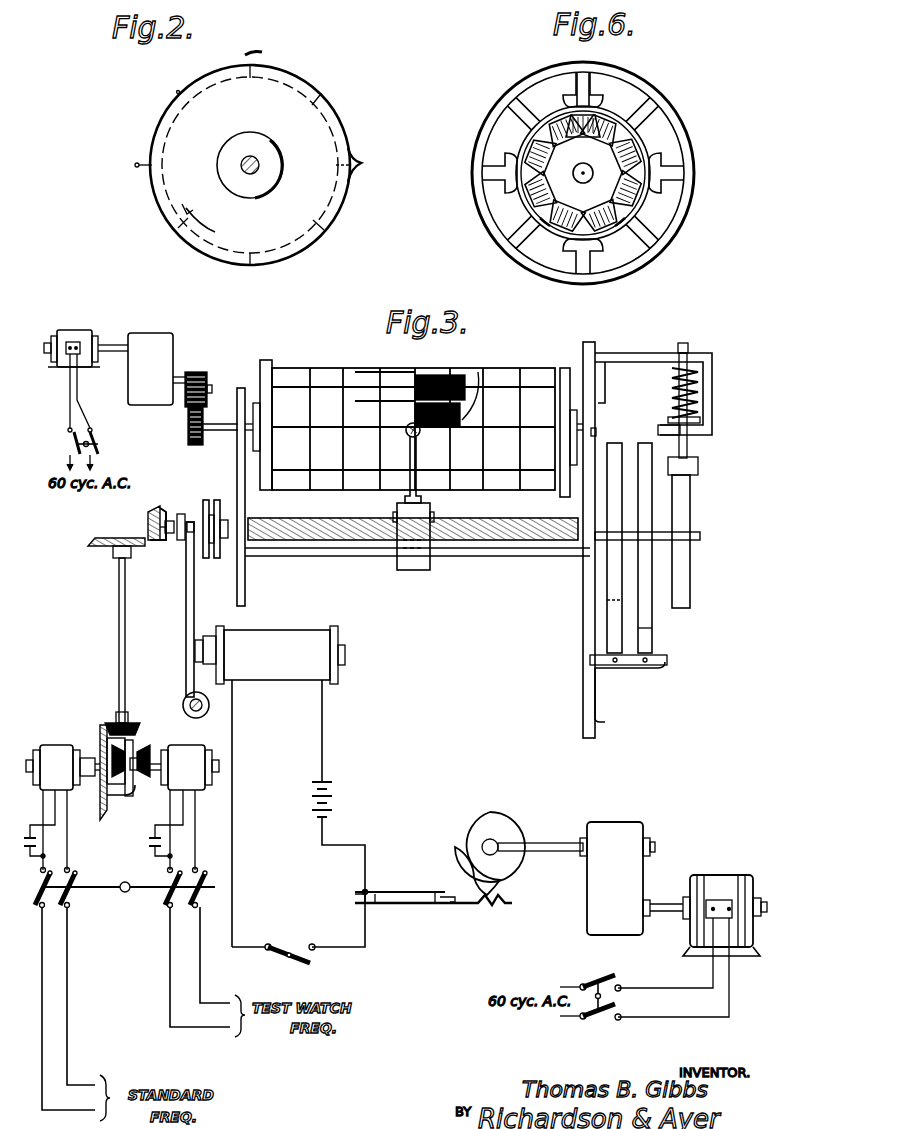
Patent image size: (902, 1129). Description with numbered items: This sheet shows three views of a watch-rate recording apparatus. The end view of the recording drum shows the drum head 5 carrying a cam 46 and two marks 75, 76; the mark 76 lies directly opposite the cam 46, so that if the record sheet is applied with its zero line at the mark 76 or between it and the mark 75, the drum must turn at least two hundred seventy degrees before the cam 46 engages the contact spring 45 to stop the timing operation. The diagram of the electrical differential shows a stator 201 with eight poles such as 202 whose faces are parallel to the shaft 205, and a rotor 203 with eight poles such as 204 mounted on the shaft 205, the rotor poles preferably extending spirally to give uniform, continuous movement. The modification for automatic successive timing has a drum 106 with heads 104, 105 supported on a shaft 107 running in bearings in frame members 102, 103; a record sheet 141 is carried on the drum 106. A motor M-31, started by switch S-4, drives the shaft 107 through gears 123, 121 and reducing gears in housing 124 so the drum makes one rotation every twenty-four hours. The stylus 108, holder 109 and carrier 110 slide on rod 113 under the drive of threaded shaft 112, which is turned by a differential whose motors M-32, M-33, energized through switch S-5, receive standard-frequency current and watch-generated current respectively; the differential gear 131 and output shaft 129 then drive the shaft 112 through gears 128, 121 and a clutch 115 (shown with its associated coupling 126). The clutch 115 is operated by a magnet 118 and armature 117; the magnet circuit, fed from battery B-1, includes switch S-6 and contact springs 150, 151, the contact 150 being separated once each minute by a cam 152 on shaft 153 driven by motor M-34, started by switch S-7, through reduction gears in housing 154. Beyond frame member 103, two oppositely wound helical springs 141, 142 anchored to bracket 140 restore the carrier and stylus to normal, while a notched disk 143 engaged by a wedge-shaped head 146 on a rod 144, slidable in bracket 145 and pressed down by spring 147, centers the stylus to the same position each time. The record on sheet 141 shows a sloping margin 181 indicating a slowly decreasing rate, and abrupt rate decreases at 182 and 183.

In FIG. 2, the drum head 5 is at (339, 120).
In FIG. 2, the movable switch contact 45 is at (250, 50).
In FIG. 2, the mark 75 is at (178, 92).
In FIG. 2, the mark 76 is at (147, 162).
In FIG. 2, the cam 46 is at (362, 160).
In FIG. 6, the stator 201 is at (681, 137).
In FIG. 6, the stator pole 202 is at (601, 107).
In FIG. 6, the rotor 203 is at (640, 190).
In FIG. 6, the rotor pole 204 is at (628, 218).
In FIG. 6, the shaft 205 is at (583, 163).
In FIG. 3, the motor M-31 is at (72, 330).
In FIG. 3, the switch S-4 is at (99, 451).
In FIG. 3, the housing 124 is at (145, 338).
In FIG. 3, the gear 123 is at (196, 372).
In FIG. 3, the gear 121 is at (194, 445).
In FIG. 3, the shaft 107 is at (225, 432).
In FIG. 3, the frame member 102 is at (240, 388).
In FIG. 3, the head 104 is at (268, 360).
In FIG. 3, the drum 106 is at (278, 372).
In FIG. 3, the sloping margin 181 is at (485, 365).
In FIG. 3, the record portion 182 is at (388, 372).
In FIG. 3, the record portion 183 is at (375, 400).
In FIG. 3, the record sheet 141 is at (496, 375).
In FIG. 3, the head 105 is at (563, 368).
In FIG. 3, the frame member 103 is at (590, 342).
In FIG. 3, the bracket 145 is at (652, 357).
In FIG. 3, the spring 147 is at (690, 386).
In FIG. 3, the rod 144 is at (690, 438).
In FIG. 3, the wedge-shaped head 146 is at (698, 464).
In FIG. 3, the disk 143 is at (683, 570).
In FIG. 3, the helical spring 142 is at (652, 610).
In FIG. 3, the bracket 140 is at (635, 668).
In FIG. 3, the threaded shaft 112 is at (490, 520).
In FIG. 3, the rod 113 is at (508, 560).
In FIG. 3, the stylus 108 is at (408, 437).
In FIG. 3, the holder 109 is at (420, 475).
In FIG. 3, the carrier 110 is at (410, 570).
In FIG. 3, the clutch 126 is at (172, 521).
In FIG. 3, the clutch 115 is at (210, 558).
In FIG. 3, the armature 117 is at (186, 588).
In FIG. 3, the gear 128 is at (98, 548).
In FIG. 3, the output shaft 129 is at (95, 639).
In FIG. 3, the gear 131 is at (105, 725).
In FIG. 3, the magnet 118 is at (300, 640).
In FIG. 3, the battery B-1 is at (343, 864).
In FIG. 3, the switch S-6 is at (273, 942).
In FIG. 3, the contact spring 151 is at (408, 890).
In FIG. 3, the contact spring 150 is at (468, 905).
In FIG. 3, the cam 152 is at (500, 822).
In FIG. 3, the shaft 153 is at (546, 843).
In FIG. 3, the housing 154 is at (627, 822).
In FIG. 3, the motor M-34 is at (716, 876).
In FIG. 3, the switch S-7 is at (590, 985).
In FIG. 3, the motor M-32 is at (57, 745).
In FIG. 3, the motor M-33 is at (185, 755).
In FIG. 3, the switch S-5 is at (125, 894).